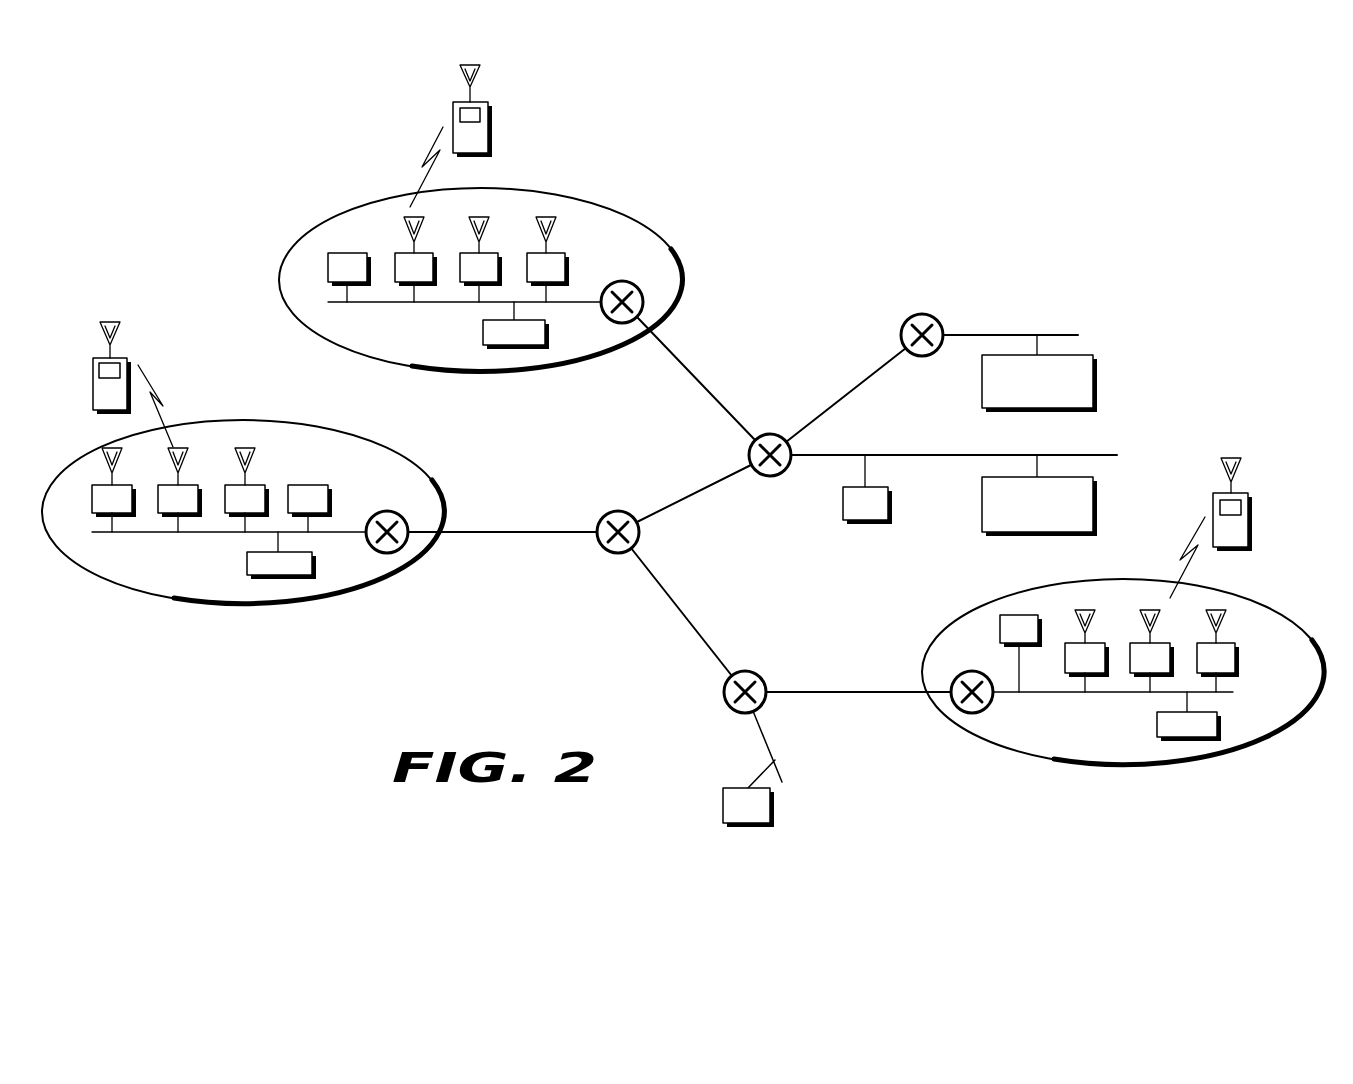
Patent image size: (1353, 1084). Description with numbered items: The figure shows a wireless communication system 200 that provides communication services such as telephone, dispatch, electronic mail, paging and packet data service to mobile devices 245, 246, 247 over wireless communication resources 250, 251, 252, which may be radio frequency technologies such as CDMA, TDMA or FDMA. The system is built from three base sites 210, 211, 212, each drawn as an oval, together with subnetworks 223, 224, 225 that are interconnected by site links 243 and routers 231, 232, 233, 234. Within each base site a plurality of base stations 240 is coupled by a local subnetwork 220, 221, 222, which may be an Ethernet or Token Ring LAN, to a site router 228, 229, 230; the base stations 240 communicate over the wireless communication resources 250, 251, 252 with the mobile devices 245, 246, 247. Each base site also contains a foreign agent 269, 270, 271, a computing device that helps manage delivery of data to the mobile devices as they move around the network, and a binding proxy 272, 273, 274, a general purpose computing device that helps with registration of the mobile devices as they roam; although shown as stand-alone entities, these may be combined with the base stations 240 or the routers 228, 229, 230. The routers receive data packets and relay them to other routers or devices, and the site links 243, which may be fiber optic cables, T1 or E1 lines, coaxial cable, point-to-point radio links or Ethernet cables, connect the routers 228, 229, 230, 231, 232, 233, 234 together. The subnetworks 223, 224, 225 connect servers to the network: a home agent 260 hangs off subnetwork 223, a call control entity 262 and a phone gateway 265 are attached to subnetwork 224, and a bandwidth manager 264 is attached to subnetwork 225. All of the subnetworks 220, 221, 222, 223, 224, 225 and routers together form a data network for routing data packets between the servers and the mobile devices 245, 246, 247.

The wireless communication system 200 is at (508, 697).
The base site 210 is at (342, 431).
The base site 211 is at (1268, 620).
The base site 212 is at (575, 197).
The subnetwork 220 is at (203, 533).
The subnetwork 221 is at (1233, 692).
The subnetwork 222 is at (440, 303).
The subnetwork 223 is at (778, 765).
The subnetwork 224 is at (918, 455).
The subnetwork 225 is at (1063, 334).
The router 228 is at (987, 707).
The router 229 is at (640, 288).
The router 230 is at (402, 517).
The router 231 is at (600, 545).
The router 232 is at (745, 671).
The router 233 is at (766, 430).
The router 234 is at (903, 326).
The base station 240 is at (566, 266).
The site link 243 is at (517, 533).
The mobile device 245 is at (93, 380).
The mobile device 246 is at (1250, 520).
The mobile device 247 is at (490, 126).
The wireless communication resource 250 is at (165, 398).
The wireless communication resource 251 is at (1190, 555).
The wireless communication resource 252 is at (426, 158).
The home agent 260 is at (750, 824).
The call control entity 262 is at (865, 520).
The bandwidth manager 264 is at (1085, 410).
The phone gateway 265 is at (1097, 497).
The foreign agent 269 is at (365, 253).
The foreign agent 270 is at (329, 492).
The foreign agent 271 is at (1018, 615).
The binding proxy 272 is at (313, 566).
The binding proxy 273 is at (547, 336).
The binding proxy 274 is at (1203, 738).